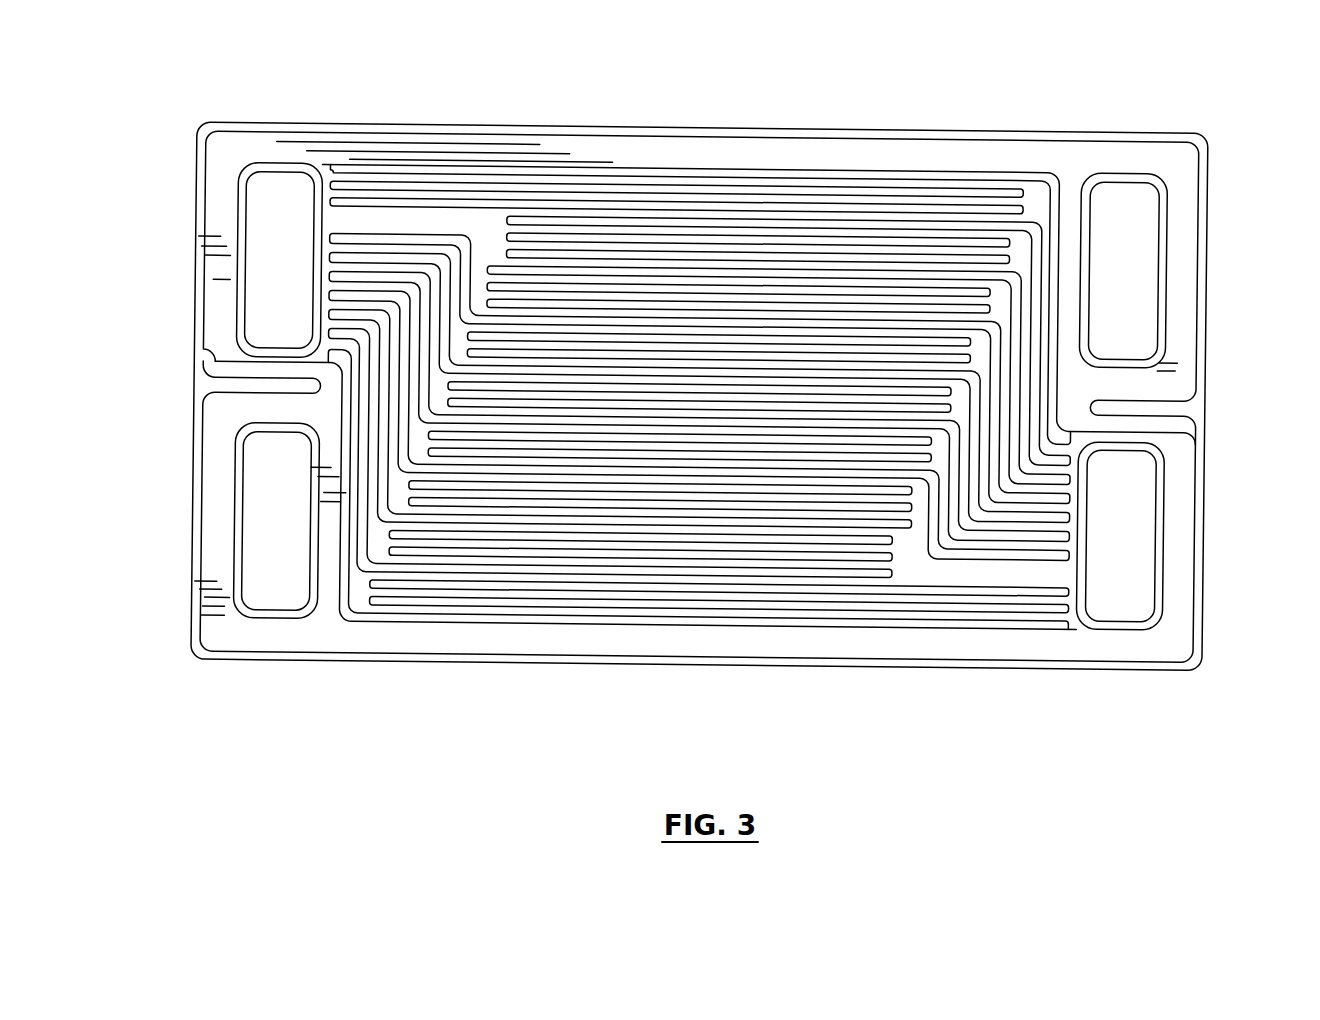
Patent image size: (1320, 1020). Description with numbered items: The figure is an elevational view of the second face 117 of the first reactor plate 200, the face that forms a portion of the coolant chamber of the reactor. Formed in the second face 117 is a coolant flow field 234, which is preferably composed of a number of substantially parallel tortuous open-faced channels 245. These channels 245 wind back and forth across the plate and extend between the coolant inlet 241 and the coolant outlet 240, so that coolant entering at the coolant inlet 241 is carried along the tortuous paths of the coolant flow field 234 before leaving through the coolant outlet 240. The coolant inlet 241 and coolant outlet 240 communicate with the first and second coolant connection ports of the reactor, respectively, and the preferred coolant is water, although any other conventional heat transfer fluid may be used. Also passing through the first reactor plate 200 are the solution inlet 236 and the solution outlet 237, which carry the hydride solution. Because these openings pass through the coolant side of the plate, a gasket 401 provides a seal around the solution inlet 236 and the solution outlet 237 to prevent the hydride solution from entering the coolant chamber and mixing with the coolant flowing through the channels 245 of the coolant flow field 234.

The first reactor plate 200 is at (715, 407).
The coolant flow field 234 is at (705, 396).
The second face 117 is at (633, 178).
The coolant outlet 240 is at (262, 275).
The solution inlet 236 is at (262, 515).
The solution outlet 237 is at (1133, 297).
The coolant inlet 241 is at (1133, 505).
The open-faced channels 245 is at (1015, 512).
The gasket 401 is at (485, 150).